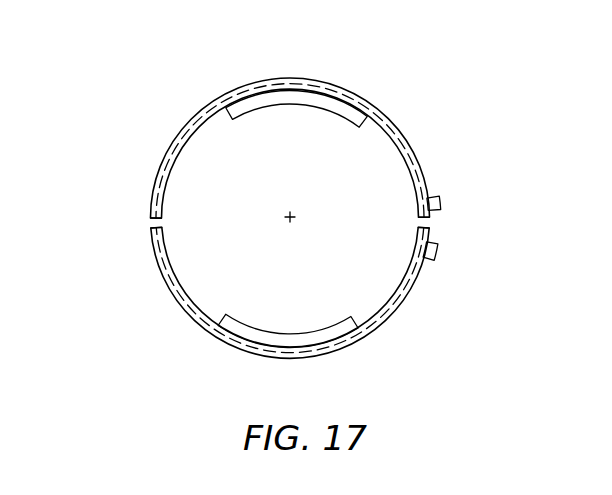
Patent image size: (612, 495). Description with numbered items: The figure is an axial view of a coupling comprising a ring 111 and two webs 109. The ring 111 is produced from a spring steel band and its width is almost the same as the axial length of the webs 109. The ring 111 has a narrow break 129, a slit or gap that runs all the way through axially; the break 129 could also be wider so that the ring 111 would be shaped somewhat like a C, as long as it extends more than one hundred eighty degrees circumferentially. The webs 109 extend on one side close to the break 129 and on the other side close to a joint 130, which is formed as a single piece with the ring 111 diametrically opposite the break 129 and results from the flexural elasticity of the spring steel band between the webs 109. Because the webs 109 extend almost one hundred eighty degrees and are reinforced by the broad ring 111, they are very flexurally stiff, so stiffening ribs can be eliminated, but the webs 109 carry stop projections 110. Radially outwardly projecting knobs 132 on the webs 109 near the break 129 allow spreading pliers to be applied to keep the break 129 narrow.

The web 109 is at (332, 85).
The stop projection 110 is at (268, 104).
The ring 111 is at (208, 107).
The break 129 is at (428, 222).
The joint 130 is at (156, 223).
The knob 132 is at (439, 197).